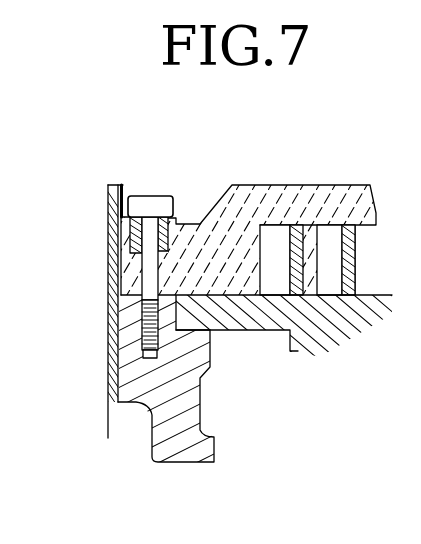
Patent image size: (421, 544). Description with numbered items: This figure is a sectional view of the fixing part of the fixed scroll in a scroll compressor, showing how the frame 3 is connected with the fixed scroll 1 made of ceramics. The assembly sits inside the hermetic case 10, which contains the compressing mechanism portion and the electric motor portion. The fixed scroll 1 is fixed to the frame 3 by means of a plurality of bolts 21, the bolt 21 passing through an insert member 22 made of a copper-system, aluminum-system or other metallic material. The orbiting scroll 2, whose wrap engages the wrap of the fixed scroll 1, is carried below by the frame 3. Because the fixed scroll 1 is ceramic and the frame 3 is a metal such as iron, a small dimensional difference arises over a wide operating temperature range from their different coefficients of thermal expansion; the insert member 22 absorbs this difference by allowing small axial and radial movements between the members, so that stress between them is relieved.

The fixed scroll 1 is at (314, 192).
The orbiting scroll 2 is at (338, 313).
The frame 3 is at (173, 443).
The hermetic case 10 is at (108, 360).
The bolt 21 is at (150, 202).
The insert member 22 is at (126, 247).